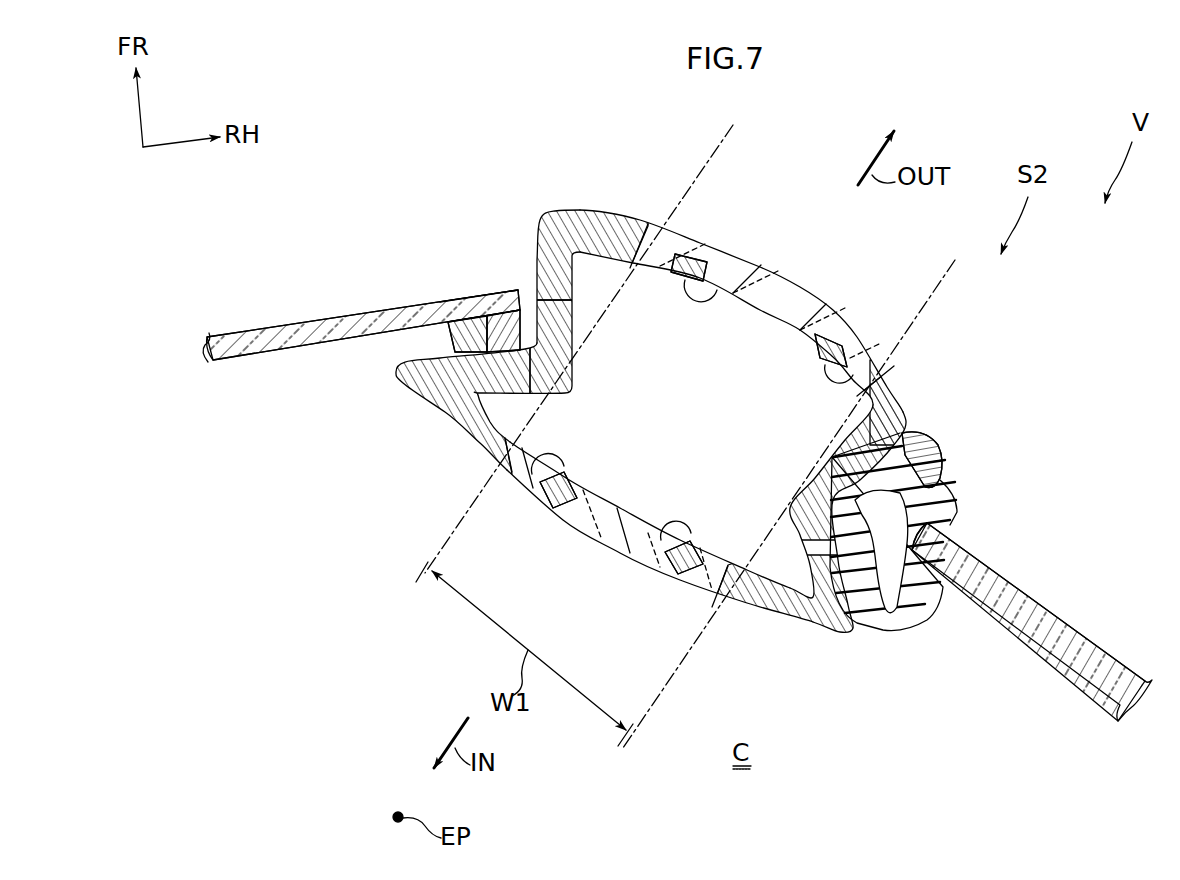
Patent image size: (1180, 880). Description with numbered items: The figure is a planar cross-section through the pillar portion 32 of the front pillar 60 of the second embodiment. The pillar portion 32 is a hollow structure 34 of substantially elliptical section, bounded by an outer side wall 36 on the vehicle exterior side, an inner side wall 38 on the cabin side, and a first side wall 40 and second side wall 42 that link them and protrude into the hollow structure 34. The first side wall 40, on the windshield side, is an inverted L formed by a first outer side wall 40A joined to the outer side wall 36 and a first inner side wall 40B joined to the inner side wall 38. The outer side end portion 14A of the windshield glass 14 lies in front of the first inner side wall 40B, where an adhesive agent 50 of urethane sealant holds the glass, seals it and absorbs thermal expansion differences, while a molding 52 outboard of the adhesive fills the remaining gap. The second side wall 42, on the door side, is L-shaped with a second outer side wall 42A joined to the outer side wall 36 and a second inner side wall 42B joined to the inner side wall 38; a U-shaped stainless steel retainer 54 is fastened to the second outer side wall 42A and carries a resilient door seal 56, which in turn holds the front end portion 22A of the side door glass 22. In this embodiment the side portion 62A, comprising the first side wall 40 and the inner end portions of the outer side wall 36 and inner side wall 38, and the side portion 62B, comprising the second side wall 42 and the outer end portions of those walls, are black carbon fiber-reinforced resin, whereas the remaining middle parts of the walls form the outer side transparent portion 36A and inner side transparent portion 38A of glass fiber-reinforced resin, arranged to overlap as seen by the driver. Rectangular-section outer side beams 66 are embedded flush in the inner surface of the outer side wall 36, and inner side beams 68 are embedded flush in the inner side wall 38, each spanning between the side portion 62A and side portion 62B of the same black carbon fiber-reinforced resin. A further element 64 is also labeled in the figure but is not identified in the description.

The windshield glass 14 is at (361, 291).
The vehicle transverse direction outer side end portion of the windshield glass 14A is at (446, 304).
The adhesive agent 50 is at (449, 330).
The molding 52 is at (524, 310).
The side portion 62A is at (545, 226).
The side portion 62B is at (907, 411).
The first side wall 40 is at (548, 386).
The first outer side wall 40A is at (573, 293).
The first inner side wall 40B is at (540, 399).
The outer side wall 36 is at (741, 310).
The outer side transparent portion 36A is at (817, 304).
The outer side beams 66 is at (690, 288).
The rib 64 is at (774, 322).
The hollow structure 34 is at (657, 420).
The second side wall 42 is at (842, 532).
The second outer side wall 42A is at (838, 447).
The second inner side wall 42B is at (792, 540).
The pillar portion 32 is at (710, 420).
The front pillar 60 is at (710, 420).
The retainer 54 is at (934, 457).
The door seal 56 is at (919, 561).
The side door glass 22 is at (1032, 594).
The front end portion of the side door glass 22A is at (957, 539).
The inner side wall 38 is at (660, 545).
The inner side transparent portion 38A is at (613, 572).
The inner side beams 68 is at (537, 474).